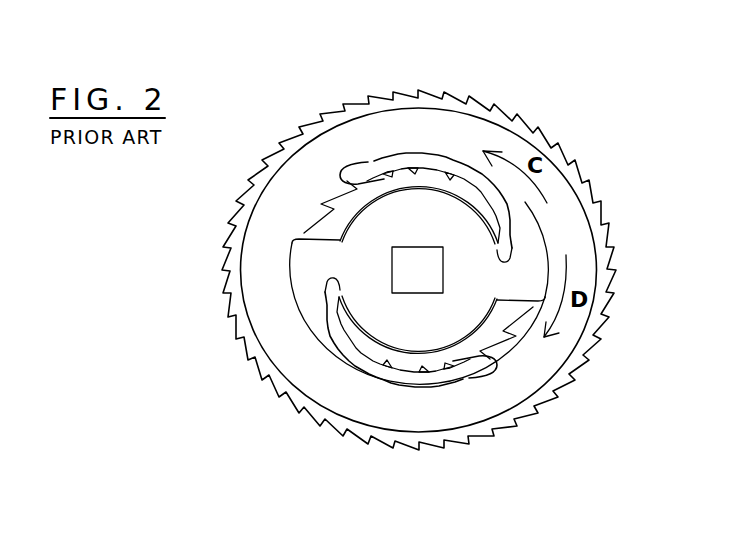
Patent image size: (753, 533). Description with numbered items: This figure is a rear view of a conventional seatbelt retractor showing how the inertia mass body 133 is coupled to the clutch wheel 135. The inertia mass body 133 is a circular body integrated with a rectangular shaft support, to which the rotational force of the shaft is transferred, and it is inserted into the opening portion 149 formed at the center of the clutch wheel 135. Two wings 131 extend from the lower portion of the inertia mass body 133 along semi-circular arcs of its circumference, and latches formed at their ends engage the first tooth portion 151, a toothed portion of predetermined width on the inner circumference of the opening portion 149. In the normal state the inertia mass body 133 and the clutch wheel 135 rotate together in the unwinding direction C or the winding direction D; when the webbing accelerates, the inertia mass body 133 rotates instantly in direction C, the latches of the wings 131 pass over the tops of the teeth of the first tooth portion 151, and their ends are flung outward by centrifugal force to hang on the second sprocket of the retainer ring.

The wings 131 is at (362, 166).
The inertia mass body 133 is at (467, 298).
The clutch wheel 135 is at (478, 102).
The opening portion 149 is at (509, 255).
The first tooth portion 151 is at (321, 204).